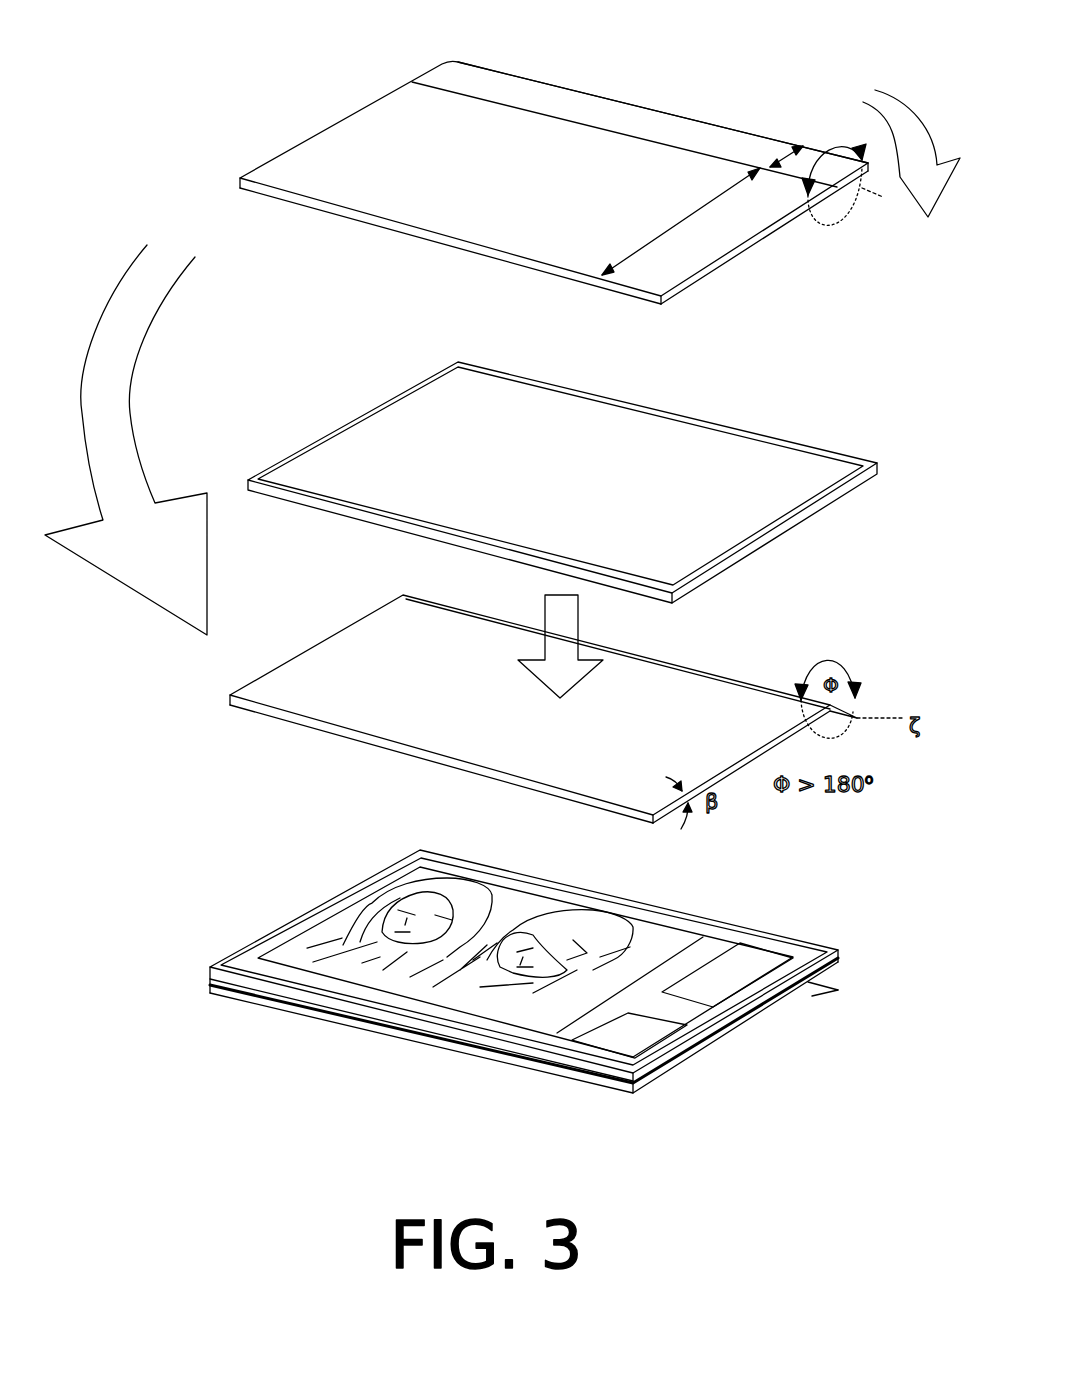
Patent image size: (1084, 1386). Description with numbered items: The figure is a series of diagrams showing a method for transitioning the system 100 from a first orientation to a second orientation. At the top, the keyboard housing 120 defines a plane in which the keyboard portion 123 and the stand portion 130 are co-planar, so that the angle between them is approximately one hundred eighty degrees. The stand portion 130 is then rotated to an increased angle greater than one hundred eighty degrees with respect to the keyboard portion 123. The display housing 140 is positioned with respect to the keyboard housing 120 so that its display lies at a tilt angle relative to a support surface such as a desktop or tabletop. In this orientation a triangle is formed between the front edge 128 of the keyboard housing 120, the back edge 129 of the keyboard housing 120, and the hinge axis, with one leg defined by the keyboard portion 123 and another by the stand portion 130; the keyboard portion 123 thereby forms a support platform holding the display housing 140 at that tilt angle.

The system 100 is at (815, 882).
The keyboard housing 120 is at (318, 54).
The keyboard portion 123 is at (327, 146).
The front edge 128 is at (447, 240).
The back edge 129 is at (654, 103).
The stand portion 130 is at (450, 73).
The display housing 140 is at (724, 421).